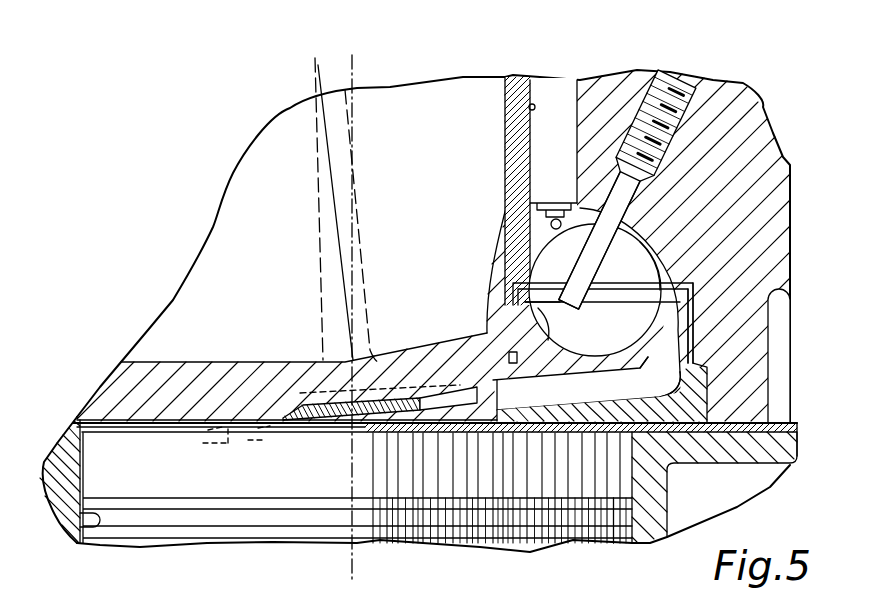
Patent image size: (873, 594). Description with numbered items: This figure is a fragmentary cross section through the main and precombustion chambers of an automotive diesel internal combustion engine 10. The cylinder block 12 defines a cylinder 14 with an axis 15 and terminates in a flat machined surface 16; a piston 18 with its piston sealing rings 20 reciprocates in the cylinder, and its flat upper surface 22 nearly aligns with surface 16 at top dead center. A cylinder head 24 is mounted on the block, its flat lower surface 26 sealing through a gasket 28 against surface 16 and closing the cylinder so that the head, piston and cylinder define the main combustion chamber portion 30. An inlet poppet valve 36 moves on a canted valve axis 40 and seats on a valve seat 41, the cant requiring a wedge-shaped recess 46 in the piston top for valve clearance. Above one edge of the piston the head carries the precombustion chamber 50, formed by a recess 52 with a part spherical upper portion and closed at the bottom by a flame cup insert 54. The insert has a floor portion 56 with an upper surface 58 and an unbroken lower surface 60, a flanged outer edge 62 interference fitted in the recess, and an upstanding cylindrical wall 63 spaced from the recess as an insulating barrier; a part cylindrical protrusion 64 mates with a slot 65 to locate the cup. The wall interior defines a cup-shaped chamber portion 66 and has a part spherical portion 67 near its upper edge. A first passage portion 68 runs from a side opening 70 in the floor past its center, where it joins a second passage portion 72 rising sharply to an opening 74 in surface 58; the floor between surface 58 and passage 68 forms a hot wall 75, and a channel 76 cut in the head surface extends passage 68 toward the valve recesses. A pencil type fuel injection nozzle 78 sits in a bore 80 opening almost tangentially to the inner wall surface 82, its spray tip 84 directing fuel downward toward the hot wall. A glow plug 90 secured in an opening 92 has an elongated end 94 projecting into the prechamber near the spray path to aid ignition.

The internal combustion engine 10 is at (213, 232).
The cylinder block 12 is at (62, 498).
The cylinder 14 is at (93, 538).
The cylinder axis 15 is at (356, 107).
The flat machined surface 16 is at (798, 425).
The piston 18 is at (612, 533).
The piston sealing rings 20 is at (157, 509).
The flat upper surface of piston 22 is at (112, 420).
The cylinder head 24 is at (776, 192).
The flat lower surface of cylinder head 26 is at (731, 464).
The gasket 28 is at (760, 421).
The main combustion chamber portion 30 is at (194, 418).
The inlet poppet valve 36 is at (321, 251).
The valve axis 40 is at (318, 183).
The valve seat 41 is at (222, 443).
The wedge-shaped piston recess 46 is at (248, 440).
The precombustion chamber 50 is at (643, 245).
The prechamber recess 52 is at (642, 228).
The flame cup insert 54 is at (690, 336).
The floor portion 56 is at (594, 410).
The upper surface of floor 58 is at (592, 353).
The lower surface of floor 60 is at (553, 418).
The flanged outer edge 62 is at (694, 387).
The upstanding cylindrical wall 63 is at (690, 311).
The part cylindrical protrusion 64 is at (504, 322).
The vertical drilled recess or slot 65 is at (512, 296).
The cup-shaped interior chamber portion 66 is at (628, 307).
The part spherical wall portion 67 is at (550, 291).
The first passage portion 68 is at (527, 400).
The side opening 70 is at (500, 402).
The second passage portion 72 is at (630, 368).
The floor upper surface opening 74 is at (628, 362).
The hot wall 75 is at (567, 369).
The channel 76 is at (482, 395).
The fuel injection nozzle 78 is at (540, 138).
The nozzle bore 80 is at (529, 107).
The inner wall surface of prechamber 82 is at (519, 356).
The spray tip 84 is at (549, 225).
The glow plug 90 is at (657, 176).
The glow plug opening 92 is at (665, 80).
The elongated end of glow plug 94 is at (543, 310).